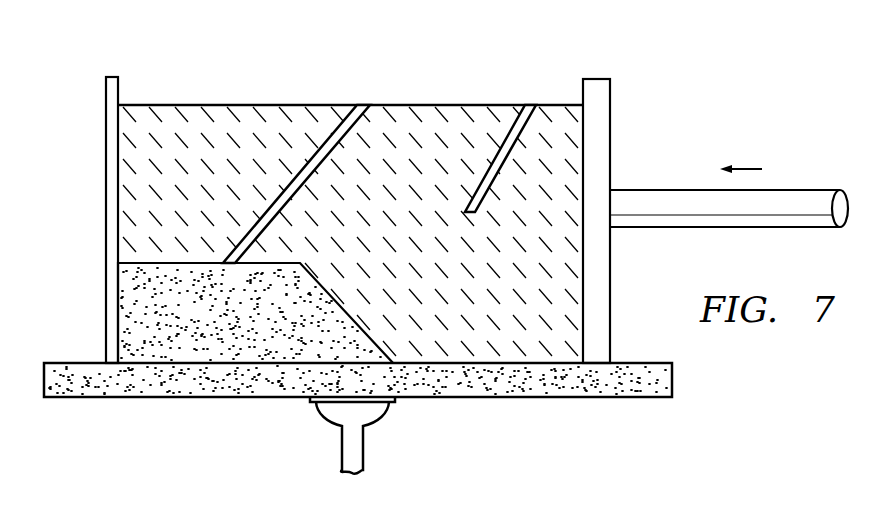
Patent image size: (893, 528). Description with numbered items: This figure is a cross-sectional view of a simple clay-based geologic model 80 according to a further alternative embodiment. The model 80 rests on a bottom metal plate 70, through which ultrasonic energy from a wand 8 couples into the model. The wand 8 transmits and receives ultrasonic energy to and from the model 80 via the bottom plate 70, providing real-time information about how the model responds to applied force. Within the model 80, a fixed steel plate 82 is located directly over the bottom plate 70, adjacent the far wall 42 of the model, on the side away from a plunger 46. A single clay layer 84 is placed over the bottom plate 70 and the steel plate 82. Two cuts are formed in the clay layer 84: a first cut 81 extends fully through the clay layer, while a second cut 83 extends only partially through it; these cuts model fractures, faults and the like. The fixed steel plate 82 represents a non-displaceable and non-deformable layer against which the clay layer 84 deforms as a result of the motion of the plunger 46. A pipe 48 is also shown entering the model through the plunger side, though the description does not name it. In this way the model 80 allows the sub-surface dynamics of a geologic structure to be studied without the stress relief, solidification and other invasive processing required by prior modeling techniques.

The wand 8 is at (357, 443).
The far wall 42 is at (105, 93).
The plunger 46 is at (612, 93).
The inlet pipe 48 is at (801, 190).
The bottom metal plate 70 is at (674, 380).
The clay-based model 80 is at (231, 68).
The cut 81 is at (313, 171).
The fixed steel plate 82 is at (241, 325).
The cut 83 is at (498, 168).
The clay layer 84 is at (443, 104).